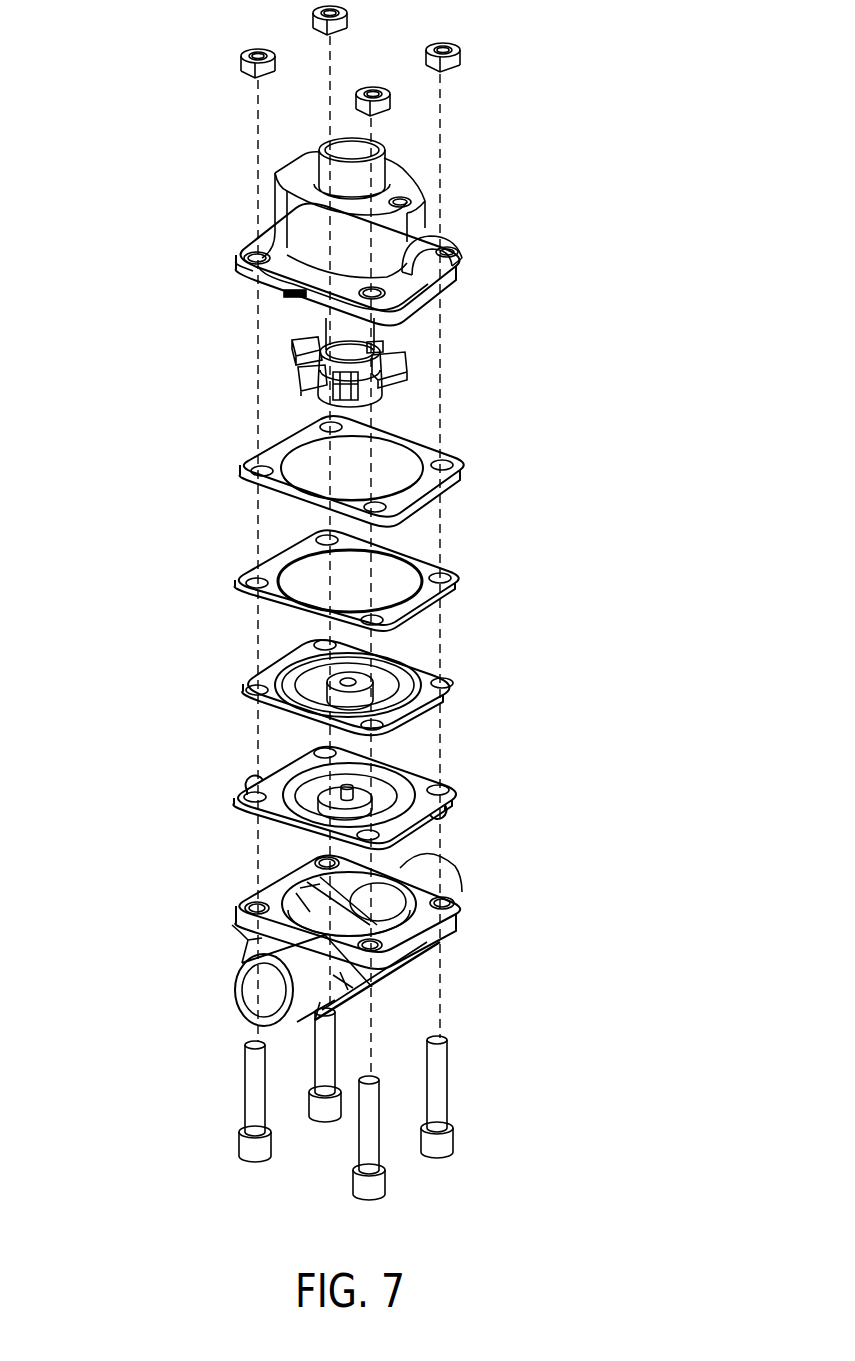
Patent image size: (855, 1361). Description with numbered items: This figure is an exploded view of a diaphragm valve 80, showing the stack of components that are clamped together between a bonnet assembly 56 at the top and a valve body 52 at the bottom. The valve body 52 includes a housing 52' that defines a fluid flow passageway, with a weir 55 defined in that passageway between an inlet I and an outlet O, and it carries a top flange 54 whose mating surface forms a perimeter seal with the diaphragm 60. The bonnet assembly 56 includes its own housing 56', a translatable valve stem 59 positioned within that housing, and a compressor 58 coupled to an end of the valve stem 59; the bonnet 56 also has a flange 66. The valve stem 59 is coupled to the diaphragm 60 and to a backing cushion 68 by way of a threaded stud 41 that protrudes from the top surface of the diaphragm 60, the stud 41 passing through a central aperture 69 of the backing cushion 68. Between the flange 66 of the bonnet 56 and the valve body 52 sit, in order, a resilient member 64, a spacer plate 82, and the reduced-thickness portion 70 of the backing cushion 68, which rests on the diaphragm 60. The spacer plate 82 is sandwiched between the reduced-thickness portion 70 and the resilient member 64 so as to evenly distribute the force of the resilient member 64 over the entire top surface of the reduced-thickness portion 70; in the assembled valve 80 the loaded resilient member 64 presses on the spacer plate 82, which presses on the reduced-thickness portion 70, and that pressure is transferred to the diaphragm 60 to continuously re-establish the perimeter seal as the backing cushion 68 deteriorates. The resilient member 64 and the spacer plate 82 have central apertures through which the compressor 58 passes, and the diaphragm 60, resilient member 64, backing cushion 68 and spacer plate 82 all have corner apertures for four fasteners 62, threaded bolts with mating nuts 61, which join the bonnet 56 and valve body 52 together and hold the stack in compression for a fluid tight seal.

The diaphragm valve 80 is at (88, 86).
The mating nuts 61 is at (458, 58).
The bonnet assembly 56 is at (347, 232).
The housing 56' is at (373, 208).
The flange 66 is at (250, 276).
The valve stem 59 is at (328, 330).
The compressor 58 is at (416, 378).
The resilient member 64 is at (470, 458).
The spacer plate 82 is at (468, 572).
The backing cushion 68 is at (464, 686).
The central aperture 69 is at (354, 680).
The reduced-thickness portion 70 is at (244, 698).
The diaphragm 60 is at (468, 800).
The threaded stud 41 is at (352, 792).
The valve body 52 is at (363, 943).
The housing 52' is at (362, 917).
The weir 55 is at (332, 912).
The outlet O is at (456, 886).
The flange 54 is at (272, 924).
The inlet I is at (238, 1004).
The fasteners 62 is at (452, 1097).